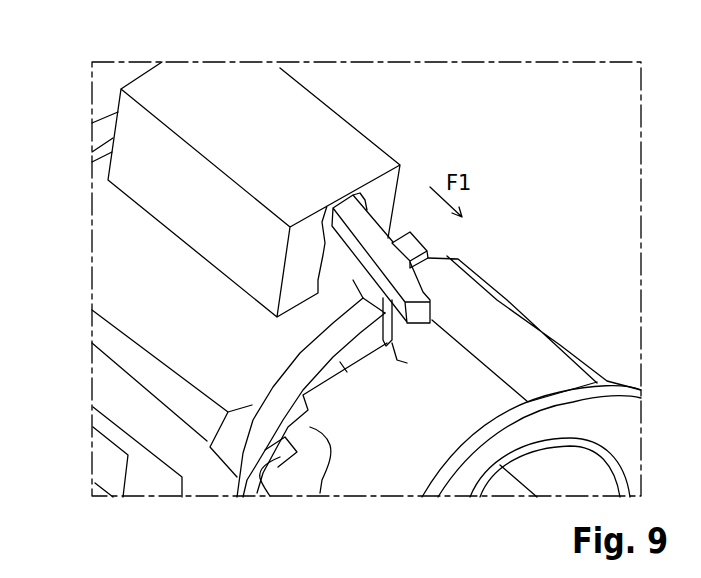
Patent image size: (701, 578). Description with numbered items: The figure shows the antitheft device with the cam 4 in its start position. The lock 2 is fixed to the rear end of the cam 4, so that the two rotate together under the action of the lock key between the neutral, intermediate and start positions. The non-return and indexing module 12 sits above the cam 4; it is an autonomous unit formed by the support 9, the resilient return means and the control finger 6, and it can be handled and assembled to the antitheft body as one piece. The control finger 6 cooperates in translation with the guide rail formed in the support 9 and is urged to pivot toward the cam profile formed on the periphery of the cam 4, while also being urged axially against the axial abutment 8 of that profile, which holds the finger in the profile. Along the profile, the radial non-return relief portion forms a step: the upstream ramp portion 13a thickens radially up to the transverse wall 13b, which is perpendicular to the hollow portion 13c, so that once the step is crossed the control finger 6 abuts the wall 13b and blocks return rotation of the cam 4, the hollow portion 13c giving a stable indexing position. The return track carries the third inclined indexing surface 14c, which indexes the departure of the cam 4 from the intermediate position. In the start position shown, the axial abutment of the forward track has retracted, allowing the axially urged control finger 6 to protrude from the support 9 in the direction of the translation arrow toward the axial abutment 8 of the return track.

The lock 2 is at (120, 258).
The cam 4 is at (572, 385).
The control finger 6 is at (435, 323).
The axial abutment 8 is at (388, 343).
The support 9 is at (364, 165).
The non-return and indexing module 12 is at (303, 103).
The upstream ramp portion 13a is at (348, 375).
The transverse wall 13b is at (315, 407).
The hollow portion 13c is at (320, 493).
The third inclined indexing surface 14c is at (273, 473).